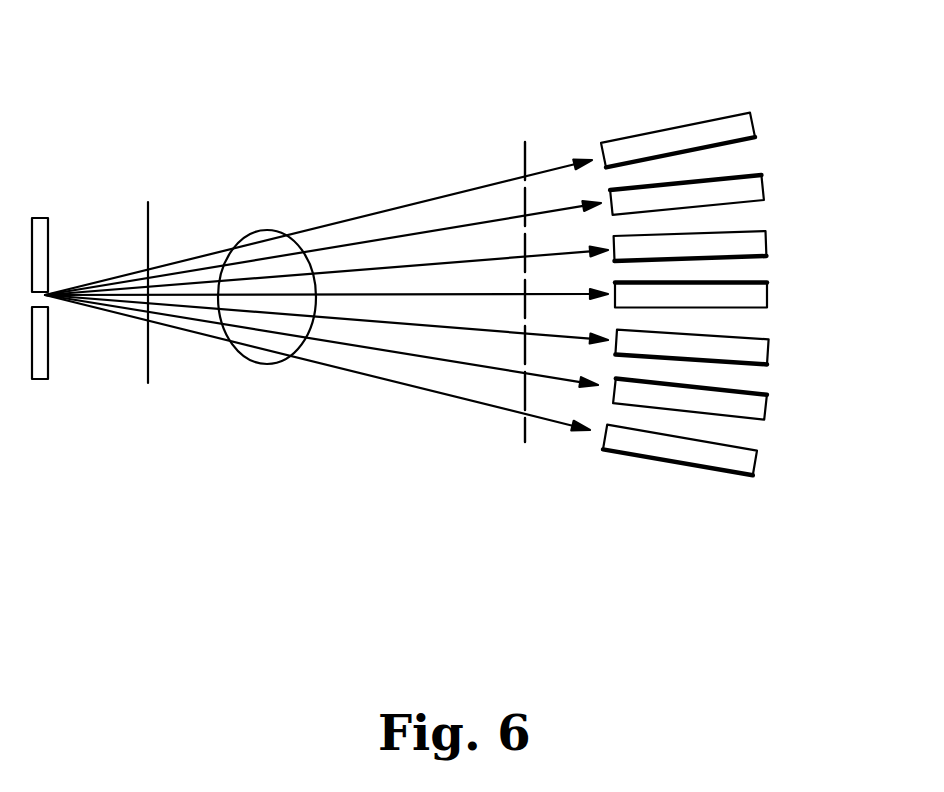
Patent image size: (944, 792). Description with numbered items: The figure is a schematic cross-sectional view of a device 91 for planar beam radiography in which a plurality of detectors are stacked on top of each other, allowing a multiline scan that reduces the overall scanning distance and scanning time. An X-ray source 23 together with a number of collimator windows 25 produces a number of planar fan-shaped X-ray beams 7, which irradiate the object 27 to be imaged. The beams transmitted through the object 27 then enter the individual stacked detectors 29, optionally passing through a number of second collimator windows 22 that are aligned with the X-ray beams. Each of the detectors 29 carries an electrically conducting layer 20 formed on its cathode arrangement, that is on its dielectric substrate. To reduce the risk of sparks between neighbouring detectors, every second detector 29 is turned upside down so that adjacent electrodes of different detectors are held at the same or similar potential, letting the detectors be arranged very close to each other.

The device 91 is at (252, 62).
The X-ray source 23 is at (48, 358).
The collimator windows 25 is at (148, 370).
The object 27 is at (300, 350).
The planar fan-shaped X-ray beams 7 is at (422, 235).
The second collimator windows 22 is at (525, 442).
The stacked detectors 29 is at (640, 136).
The electrically conducting layer 20 is at (712, 265).